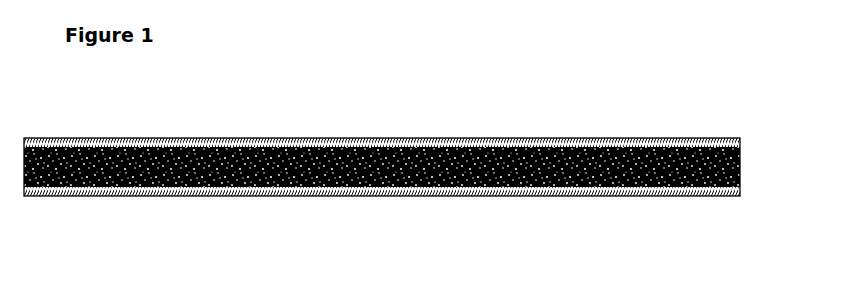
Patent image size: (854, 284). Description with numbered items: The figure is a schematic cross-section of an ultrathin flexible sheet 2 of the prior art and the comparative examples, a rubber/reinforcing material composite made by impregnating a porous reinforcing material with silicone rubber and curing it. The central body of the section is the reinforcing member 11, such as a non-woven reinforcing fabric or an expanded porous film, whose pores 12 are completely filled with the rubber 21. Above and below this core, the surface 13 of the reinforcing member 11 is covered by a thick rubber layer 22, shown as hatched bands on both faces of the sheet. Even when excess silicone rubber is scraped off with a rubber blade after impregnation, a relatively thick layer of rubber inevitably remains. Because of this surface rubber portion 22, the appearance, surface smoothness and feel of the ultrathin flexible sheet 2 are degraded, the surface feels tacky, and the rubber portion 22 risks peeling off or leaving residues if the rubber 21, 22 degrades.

The ultrathin flexible sheet 2 is at (395, 161).
The reinforcing member 11 is at (740, 180).
The pores 12 is at (173, 138).
The surface 13 is at (382, 225).
The rubber 21 is at (197, 196).
The rubber layer 22 is at (352, 196).